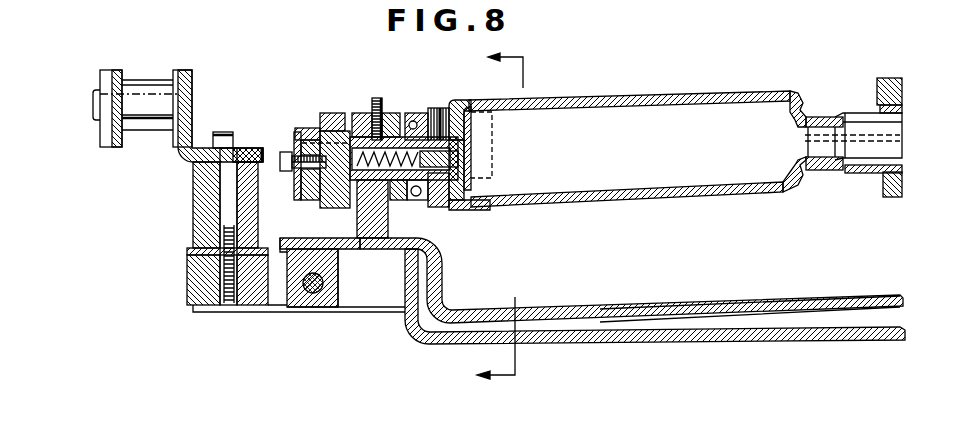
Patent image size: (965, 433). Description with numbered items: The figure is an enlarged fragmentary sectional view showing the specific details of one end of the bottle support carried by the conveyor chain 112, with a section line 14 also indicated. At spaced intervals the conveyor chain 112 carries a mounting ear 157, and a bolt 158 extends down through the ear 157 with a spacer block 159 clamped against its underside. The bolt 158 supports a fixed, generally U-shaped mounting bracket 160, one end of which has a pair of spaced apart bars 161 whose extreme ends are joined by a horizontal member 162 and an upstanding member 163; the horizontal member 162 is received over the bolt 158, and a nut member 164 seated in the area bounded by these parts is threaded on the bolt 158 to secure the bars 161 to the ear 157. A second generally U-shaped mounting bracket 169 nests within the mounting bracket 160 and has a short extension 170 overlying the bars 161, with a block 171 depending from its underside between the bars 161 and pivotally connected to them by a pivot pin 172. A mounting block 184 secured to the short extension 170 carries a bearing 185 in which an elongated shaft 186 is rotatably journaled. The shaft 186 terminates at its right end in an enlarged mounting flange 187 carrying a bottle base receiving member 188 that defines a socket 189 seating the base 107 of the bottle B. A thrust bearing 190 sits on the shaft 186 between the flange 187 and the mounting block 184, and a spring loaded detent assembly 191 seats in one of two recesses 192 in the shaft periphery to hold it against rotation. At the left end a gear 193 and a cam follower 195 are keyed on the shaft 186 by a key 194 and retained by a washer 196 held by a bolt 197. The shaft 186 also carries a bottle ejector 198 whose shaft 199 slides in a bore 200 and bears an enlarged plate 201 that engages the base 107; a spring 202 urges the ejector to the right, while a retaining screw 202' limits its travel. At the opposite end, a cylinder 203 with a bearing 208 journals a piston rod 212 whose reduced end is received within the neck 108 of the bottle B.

The section line 14- 14 is at (484, 216).
The conveyor chain 112 is at (190, 72).
The mounting ear 157 is at (241, 148).
The bolt 158 is at (223, 131).
The spacer block 159 is at (195, 200).
The horizontal member 162 is at (187, 250).
The upstanding member 163 is at (187, 283).
The bar 161 is at (375, 309).
The block 171 is at (289, 309).
The nut member 164 is at (259, 310).
The pivot pin 172 is at (324, 282).
The short extension 170 is at (311, 243).
The mounting block 184 is at (408, 226).
The second mounting bracket 169 is at (663, 302).
The mounting bracket 160 is at (598, 338).
The bolt 197 is at (293, 170).
The washer 196 is at (293, 141).
The cam follower 195 is at (305, 130).
The key 194 is at (318, 131).
The gear 193 is at (332, 112).
The elongated shaft 186 is at (311, 200).
The bearing 185 is at (361, 205).
The enlarged plate 201 is at (478, 131).
The shaft 199 is at (470, 190).
The bottle ejector 198 is at (475, 148).
The bore 200 is at (388, 137).
The spring loaded detent assembly 191 is at (372, 98).
The thrust bearing 190 is at (416, 113).
The retaining screw 202' is at (451, 103).
The bottle base receiving member 188 is at (463, 102).
The socket 189 is at (472, 117).
The spring 202 is at (490, 170).
The base 107 is at (473, 175).
The recess 192 is at (398, 201).
The mounting flange 187 is at (430, 206).
The bottle B is at (610, 100).
The neck 108 is at (823, 170).
The piston rod 212 is at (860, 118).
The cylinder 203 is at (883, 78).
The bearing 208 is at (903, 108).